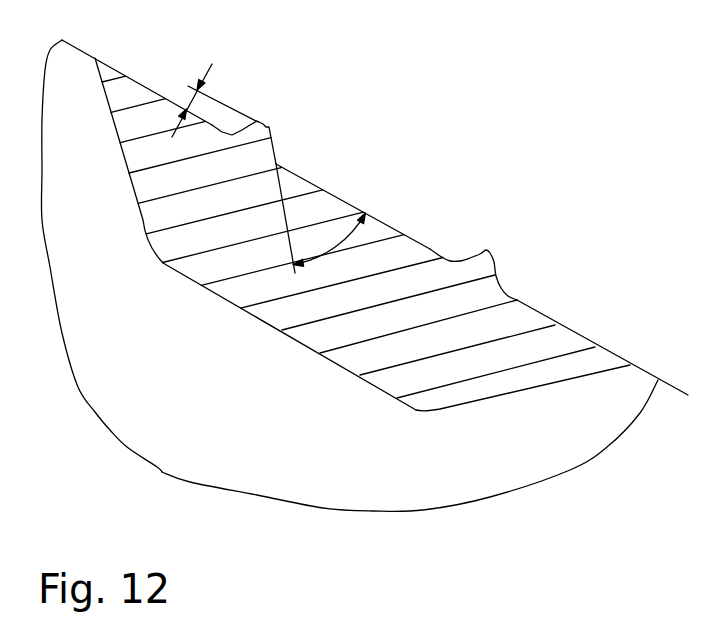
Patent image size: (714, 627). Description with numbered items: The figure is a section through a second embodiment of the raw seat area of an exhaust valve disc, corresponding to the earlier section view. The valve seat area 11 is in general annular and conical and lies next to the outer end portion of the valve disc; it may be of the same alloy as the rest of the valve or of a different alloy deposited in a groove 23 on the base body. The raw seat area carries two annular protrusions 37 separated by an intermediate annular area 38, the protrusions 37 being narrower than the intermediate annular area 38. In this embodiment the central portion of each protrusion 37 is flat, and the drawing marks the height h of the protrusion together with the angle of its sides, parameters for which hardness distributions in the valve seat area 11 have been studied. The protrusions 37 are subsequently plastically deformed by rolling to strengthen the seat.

The valve seat area 11 is at (449, 131).
The groove 23 is at (197, 283).
The annular protrusions 37 is at (263, 122).
The intermediate annular area 38 is at (350, 207).
The height of the protrusion h is at (208, 121).